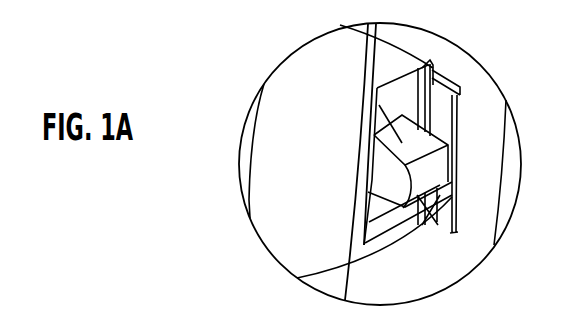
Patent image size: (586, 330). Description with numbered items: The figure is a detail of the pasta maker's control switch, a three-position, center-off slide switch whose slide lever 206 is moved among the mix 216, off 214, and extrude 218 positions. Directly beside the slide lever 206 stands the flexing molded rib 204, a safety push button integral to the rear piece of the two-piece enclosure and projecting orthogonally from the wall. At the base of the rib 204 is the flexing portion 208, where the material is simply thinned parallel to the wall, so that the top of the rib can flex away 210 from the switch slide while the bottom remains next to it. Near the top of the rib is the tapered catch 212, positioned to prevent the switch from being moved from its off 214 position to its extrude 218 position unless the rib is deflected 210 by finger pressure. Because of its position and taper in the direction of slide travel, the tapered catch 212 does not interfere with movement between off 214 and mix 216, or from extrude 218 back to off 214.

The flexing molded rib 204 is at (432, 84).
The slide lever 206 is at (363, 98).
The flexing portion 208 is at (375, 23).
The flexing away / deflection 210 is at (400, 251).
The tapered catch 212 is at (297, 278).
The off position 214 is at (295, 188).
The mix position 216 is at (297, 133).
The extrude position 218 is at (288, 266).